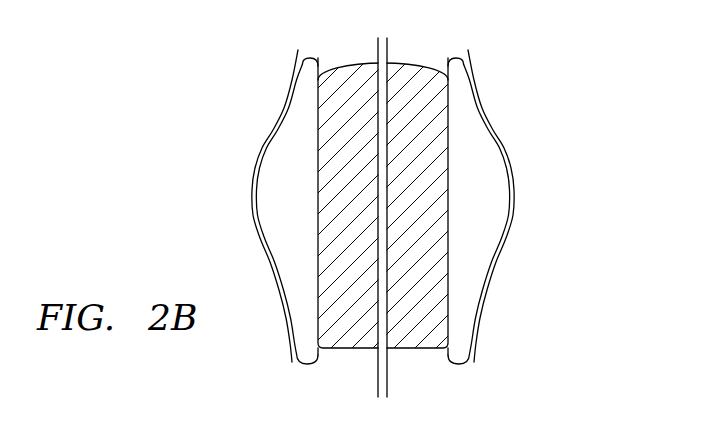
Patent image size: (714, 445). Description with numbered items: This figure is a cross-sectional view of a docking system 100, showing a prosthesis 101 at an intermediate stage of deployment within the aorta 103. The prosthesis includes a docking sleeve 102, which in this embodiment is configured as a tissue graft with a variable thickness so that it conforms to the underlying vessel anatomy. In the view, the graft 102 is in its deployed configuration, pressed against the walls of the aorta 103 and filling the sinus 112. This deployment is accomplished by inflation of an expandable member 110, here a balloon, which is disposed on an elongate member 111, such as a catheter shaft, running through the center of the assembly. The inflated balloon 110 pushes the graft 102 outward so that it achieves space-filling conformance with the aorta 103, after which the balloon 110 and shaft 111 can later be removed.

The docking system 100 is at (548, 66).
The prosthesis 101 is at (258, 143).
The docking sleeve 102 is at (497, 210).
The aorta 103 is at (565, 135).
The expandable member 110 is at (345, 350).
The elongate member 111 is at (388, 380).
The sinus 112 is at (515, 192).